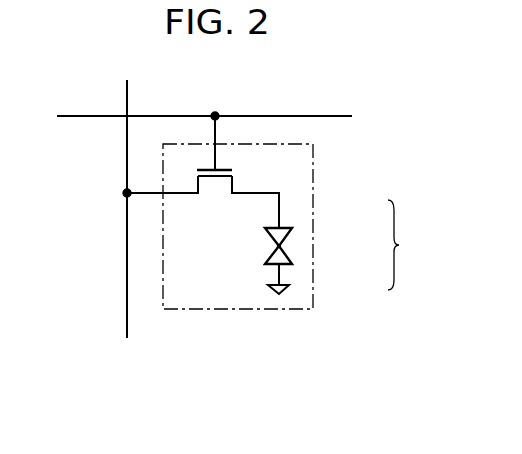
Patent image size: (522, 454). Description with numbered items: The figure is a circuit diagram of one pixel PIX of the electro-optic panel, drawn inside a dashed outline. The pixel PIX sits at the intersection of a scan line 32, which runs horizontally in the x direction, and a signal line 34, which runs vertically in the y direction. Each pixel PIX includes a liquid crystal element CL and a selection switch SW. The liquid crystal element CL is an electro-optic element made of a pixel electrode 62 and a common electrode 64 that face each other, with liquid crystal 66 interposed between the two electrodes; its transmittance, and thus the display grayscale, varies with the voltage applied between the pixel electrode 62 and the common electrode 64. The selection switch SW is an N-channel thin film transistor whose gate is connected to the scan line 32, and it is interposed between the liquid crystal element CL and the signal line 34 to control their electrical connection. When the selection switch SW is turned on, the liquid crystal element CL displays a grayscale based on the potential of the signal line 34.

The scan line 32 is at (81, 117).
The signal line 34 is at (126, 254).
The pixel PIX is at (314, 162).
The selection switch SW is at (215, 178).
The liquid crystal element CL is at (411, 245).
The pixel electrode 62 is at (268, 226).
The liquid crystal 66 is at (281, 246).
The common electrode 64 is at (276, 266).